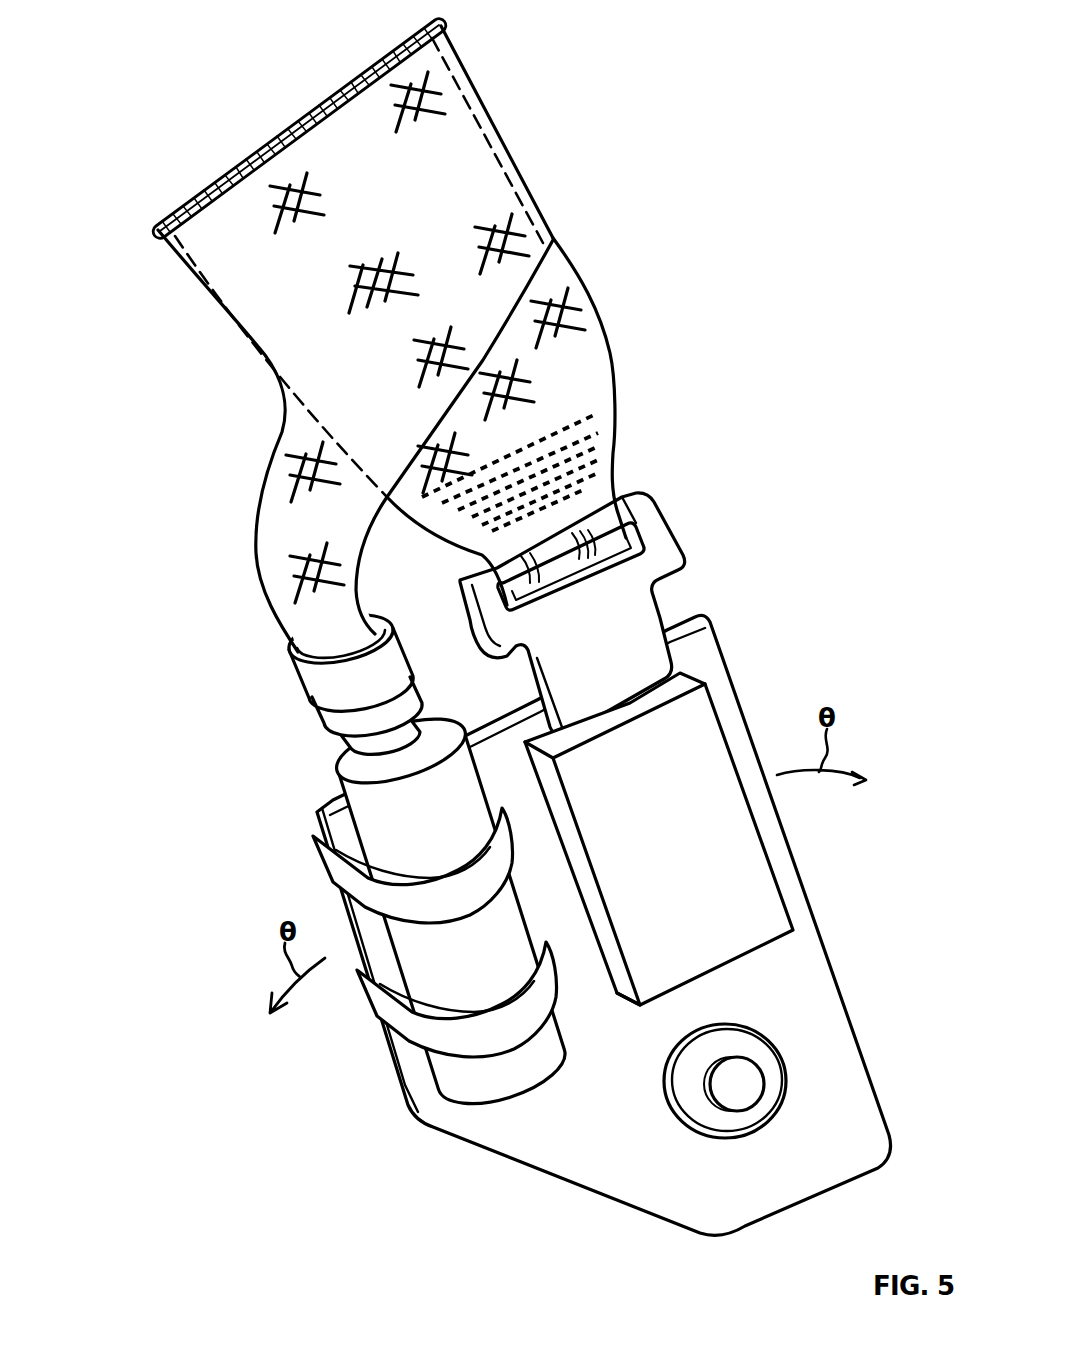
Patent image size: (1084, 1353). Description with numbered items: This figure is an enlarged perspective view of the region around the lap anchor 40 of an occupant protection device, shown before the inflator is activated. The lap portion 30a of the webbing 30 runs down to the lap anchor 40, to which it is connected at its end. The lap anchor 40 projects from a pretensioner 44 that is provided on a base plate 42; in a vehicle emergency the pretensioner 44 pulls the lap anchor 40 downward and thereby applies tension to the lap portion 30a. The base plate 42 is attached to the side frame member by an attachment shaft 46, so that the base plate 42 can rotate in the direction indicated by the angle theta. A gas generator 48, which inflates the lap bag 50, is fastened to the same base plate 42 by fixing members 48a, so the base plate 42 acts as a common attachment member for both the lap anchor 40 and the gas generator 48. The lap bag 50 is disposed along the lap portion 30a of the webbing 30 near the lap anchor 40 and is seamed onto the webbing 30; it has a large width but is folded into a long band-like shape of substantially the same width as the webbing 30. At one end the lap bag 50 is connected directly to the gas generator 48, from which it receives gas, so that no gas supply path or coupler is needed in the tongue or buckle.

The lap bag 50 is at (494, 119).
The webbing 30 is at (593, 266).
The lap portion 30a is at (600, 337).
The lap anchor 40 is at (663, 533).
The pretensioner 44 is at (713, 727).
The base plate 42 is at (800, 967).
The attachment shaft 46 is at (752, 1077).
The gas generator 48 is at (343, 807).
The fixing members 48a is at (443, 900).